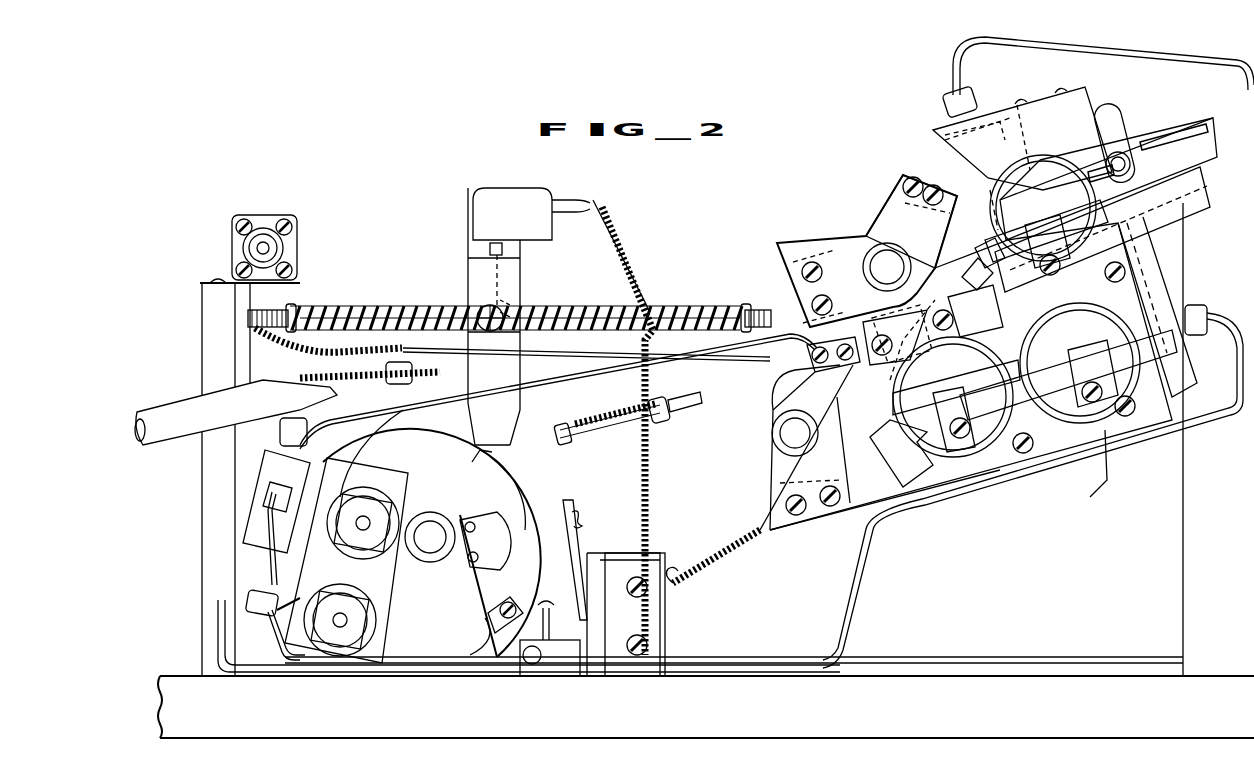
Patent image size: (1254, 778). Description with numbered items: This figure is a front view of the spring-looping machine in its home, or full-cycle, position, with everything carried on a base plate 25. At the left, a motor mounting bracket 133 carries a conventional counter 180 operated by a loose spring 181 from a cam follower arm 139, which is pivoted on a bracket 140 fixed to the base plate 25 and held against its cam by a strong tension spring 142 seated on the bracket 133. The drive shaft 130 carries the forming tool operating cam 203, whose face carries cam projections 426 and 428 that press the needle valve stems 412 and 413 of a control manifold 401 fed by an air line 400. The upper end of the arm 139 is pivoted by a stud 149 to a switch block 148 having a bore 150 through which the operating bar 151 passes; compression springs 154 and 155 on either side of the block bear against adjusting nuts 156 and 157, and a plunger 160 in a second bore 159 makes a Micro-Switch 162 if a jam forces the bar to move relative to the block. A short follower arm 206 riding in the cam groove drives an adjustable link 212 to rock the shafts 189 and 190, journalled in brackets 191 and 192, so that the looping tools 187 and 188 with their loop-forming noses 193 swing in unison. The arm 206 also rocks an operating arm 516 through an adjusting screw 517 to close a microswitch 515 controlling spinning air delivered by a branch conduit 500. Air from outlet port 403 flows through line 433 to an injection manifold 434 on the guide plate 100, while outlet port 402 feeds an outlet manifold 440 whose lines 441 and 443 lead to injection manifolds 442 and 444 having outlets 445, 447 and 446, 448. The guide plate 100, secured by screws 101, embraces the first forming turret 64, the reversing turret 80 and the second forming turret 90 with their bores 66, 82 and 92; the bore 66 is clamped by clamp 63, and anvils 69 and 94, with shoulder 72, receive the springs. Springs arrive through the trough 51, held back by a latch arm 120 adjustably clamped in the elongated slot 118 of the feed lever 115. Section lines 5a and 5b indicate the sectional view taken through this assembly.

The base plate 25 is at (650, 710).
The motor mounting bracket 133 is at (205, 335).
The counter 180 is at (292, 238).
The compression spring 155 is at (345, 305).
The compression spring 154 is at (690, 306).
The adjusting nut 157 is at (297, 305).
The adjusting nut 156 is at (748, 305).
The switch block 148 is at (470, 272).
The Micro-Switch 162 is at (526, 196).
The switch-operating plunger 160 is at (505, 251).
The second bore 159 is at (505, 284).
The longitudinally extending bore 150 is at (512, 300).
The stud 149 is at (480, 308).
The cam follower arm 139 is at (512, 396).
The operating bar 151 is at (658, 302).
The loose spring 181 is at (292, 340).
The tension spring 142 is at (300, 375).
The air line 443 is at (523, 365).
The branch compressed air conduit 500 is at (716, 358).
The air line 400 is at (192, 412).
The outlet manifold 440 is at (275, 470).
The outlet port 402 is at (312, 488).
The air line 441 is at (268, 562).
The outlet port 403 is at (272, 620).
The air line 433 is at (220, 640).
The control manifold 401 is at (376, 588).
The needle valve stem 413 is at (358, 535).
The needle valve stem 412 is at (340, 632).
The forming tool operating cam 203 is at (540, 480).
The drive shaft 130 is at (430, 528).
The cam projection 428 is at (500, 546).
The cam projection 426 is at (508, 612).
The cam follower arm 206 is at (550, 630).
The bracket 140 is at (565, 648).
The operating arm 516 is at (583, 548).
The adjusting screw 517 is at (578, 517).
The microswitch 515 is at (596, 566).
The adjustable link 212 is at (684, 418).
The injection manifold 434 is at (1190, 383).
The guide plate 100 is at (1135, 292).
The screws 101 is at (1128, 270).
The bracket 191 is at (822, 245).
The shaft 189 is at (877, 272).
The looping tool 187 is at (892, 214).
The loop-forming nose 193 is at (950, 208).
The bracket 192 is at (776, 477).
The shaft 190 is at (786, 436).
The looping tool 188 is at (833, 387).
The injection manifold 442 is at (945, 125).
The outlet 445 is at (990, 125).
The outlet 447 is at (965, 153).
The section line 5 5a is at (978, 190).
The latch arm 120 is at (1103, 122).
The elongated slot 118 is at (1180, 142).
The feed lever 115 is at (1063, 182).
The trough 51 is at (1210, 180).
The first forming turret 64 is at (1060, 204).
The central bore 66 is at (1086, 226).
The clamp 63 is at (1042, 245).
The shoulder 72 is at (985, 252).
The anvil member 69 is at (975, 268).
The injection manifold 444 is at (965, 305).
The outlet 446 is at (915, 312).
The outlet 448 is at (898, 368).
The central bore 92 is at (962, 385).
The second forming turret 90 is at (992, 410).
The anvil 94 is at (890, 433).
The central bore 82 is at (1085, 350).
The reversing turret 80 is at (1120, 368).
The section line 5 5b is at (1080, 509).